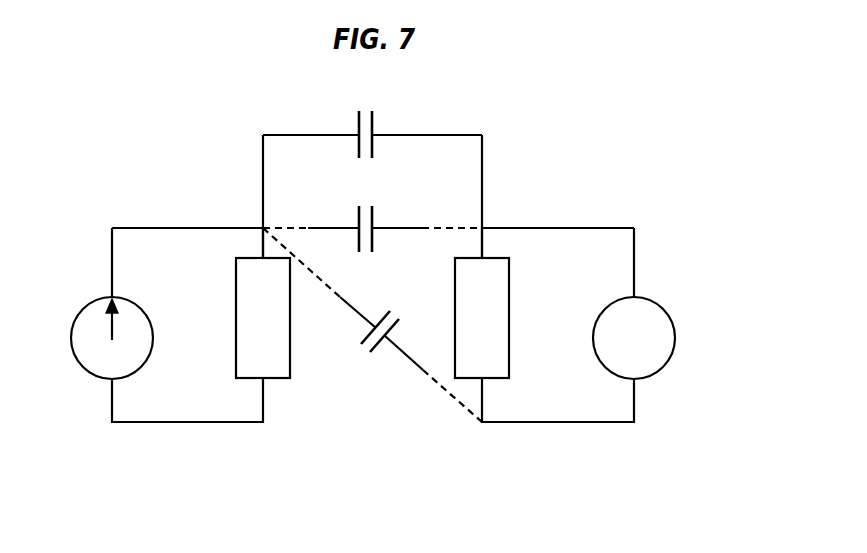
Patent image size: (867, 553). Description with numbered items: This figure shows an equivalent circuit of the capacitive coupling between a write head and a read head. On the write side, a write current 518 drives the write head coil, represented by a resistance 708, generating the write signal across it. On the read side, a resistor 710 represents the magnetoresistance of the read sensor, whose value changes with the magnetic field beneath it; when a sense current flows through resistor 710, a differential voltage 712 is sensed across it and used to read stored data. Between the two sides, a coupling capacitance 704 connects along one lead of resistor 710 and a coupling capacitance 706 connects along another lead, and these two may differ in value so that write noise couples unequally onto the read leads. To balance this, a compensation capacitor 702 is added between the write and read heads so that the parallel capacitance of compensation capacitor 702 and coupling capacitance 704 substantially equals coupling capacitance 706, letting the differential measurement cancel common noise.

The compensation capacitor 702 is at (372, 122).
The coupling capacitance 704 is at (372, 217).
The coupling capacitance 706 is at (372, 352).
The resistance 708 is at (290, 323).
The resistor 710 is at (509, 297).
The write current 518 is at (145, 307).
The differential voltage 712 is at (675, 345).